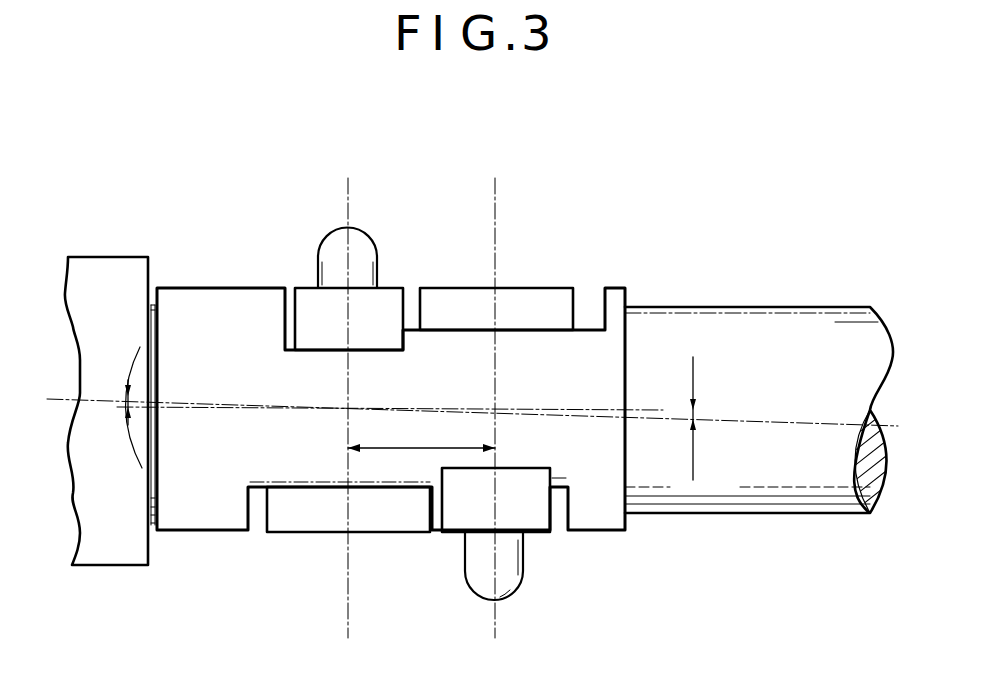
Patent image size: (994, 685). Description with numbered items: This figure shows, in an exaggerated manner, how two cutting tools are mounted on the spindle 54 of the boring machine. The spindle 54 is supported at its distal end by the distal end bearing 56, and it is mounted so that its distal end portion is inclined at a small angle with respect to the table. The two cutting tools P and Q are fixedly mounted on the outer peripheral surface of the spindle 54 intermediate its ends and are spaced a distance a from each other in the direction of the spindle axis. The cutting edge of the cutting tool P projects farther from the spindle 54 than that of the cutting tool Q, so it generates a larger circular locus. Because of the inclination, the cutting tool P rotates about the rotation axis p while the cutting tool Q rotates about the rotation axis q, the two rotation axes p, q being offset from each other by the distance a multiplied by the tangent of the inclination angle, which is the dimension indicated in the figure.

The distal end bearing 56 is at (103, 277).
The spindle 54 is at (833, 348).
The cutting tool P is at (358, 255).
The cutting tool Q is at (508, 567).
The rotation axis p is at (342, 407).
The rotation axis q is at (502, 407).
The distance a is at (408, 452).